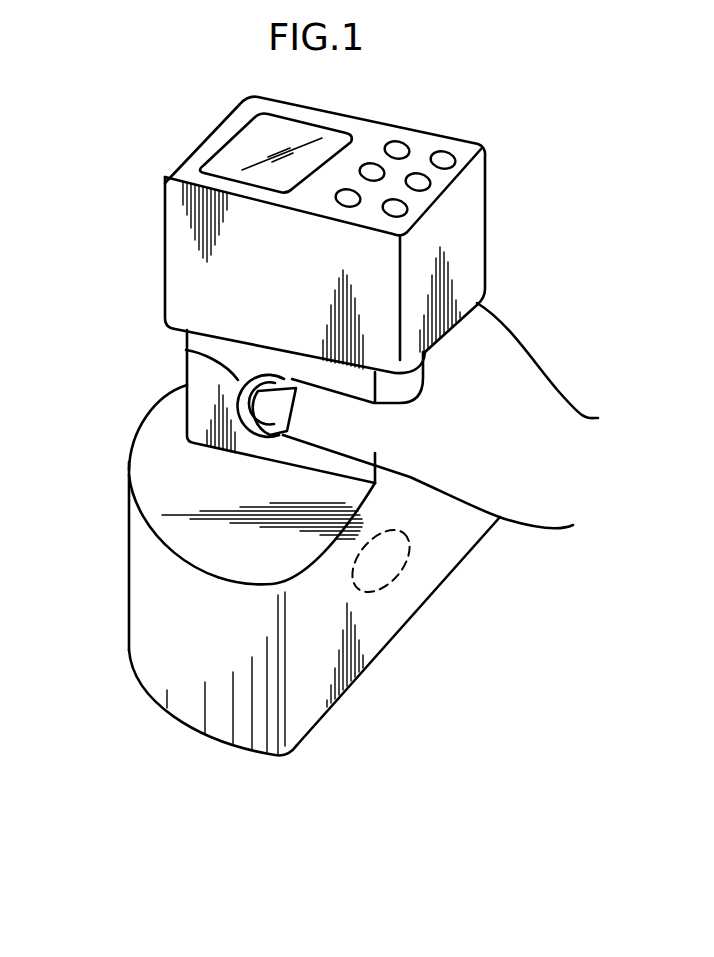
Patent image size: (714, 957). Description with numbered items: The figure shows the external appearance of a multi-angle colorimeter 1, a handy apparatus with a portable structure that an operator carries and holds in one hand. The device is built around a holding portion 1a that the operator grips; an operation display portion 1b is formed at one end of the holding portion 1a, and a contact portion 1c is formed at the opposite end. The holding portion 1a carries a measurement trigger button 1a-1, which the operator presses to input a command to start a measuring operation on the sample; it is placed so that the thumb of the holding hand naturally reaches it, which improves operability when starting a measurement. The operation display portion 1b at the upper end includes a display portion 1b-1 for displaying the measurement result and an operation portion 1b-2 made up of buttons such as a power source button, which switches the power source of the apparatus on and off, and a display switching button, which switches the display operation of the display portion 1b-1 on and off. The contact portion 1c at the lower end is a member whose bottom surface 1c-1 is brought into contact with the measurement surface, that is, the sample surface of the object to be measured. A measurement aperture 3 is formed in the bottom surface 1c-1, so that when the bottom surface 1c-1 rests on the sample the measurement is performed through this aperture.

The multi-angle colorimeter 1 is at (508, 110).
The holding portion 1a is at (205, 383).
The measurement trigger button 1a-1 is at (186, 350).
The operation display portion 1b is at (462, 240).
The display portion 1b-1 is at (250, 145).
The operation portion 1b-2 is at (481, 142).
The contact portion 1c is at (146, 602).
The bottom surface 1c-1 is at (277, 757).
The measurement aperture 3 is at (388, 556).